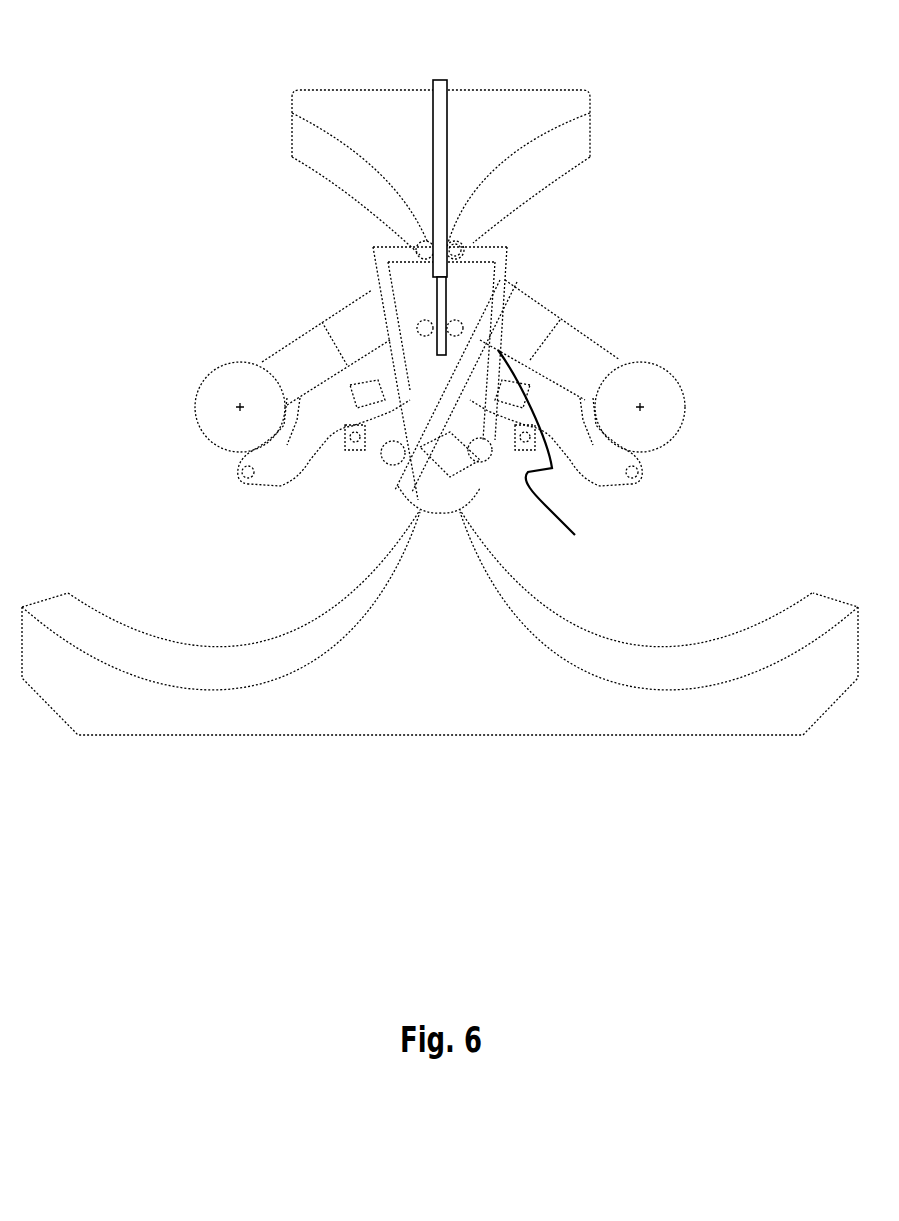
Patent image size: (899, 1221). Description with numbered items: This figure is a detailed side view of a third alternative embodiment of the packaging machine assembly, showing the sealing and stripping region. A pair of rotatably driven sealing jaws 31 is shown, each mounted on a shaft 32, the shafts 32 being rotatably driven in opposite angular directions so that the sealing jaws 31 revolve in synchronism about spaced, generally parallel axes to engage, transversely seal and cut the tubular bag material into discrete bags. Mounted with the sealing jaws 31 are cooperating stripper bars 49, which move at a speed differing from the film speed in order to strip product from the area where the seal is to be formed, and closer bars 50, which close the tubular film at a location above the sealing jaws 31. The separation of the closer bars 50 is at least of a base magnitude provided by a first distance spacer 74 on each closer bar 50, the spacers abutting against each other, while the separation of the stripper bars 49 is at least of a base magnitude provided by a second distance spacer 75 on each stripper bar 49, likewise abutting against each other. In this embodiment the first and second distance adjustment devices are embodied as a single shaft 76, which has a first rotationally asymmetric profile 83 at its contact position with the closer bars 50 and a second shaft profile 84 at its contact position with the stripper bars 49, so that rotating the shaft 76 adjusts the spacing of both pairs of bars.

The shaft 76 is at (438, 138).
The first rotationally asymmetric profile 83 is at (437, 105).
The second shaft profile 84 is at (437, 293).
The second distance spacer 75 is at (417, 318).
The first distance spacer 74 is at (472, 247).
The closer bar 50 is at (500, 263).
The sealing jaw 31 is at (538, 322).
The shaft 32 is at (640, 407).
The stripper bar 49 is at (547, 456).